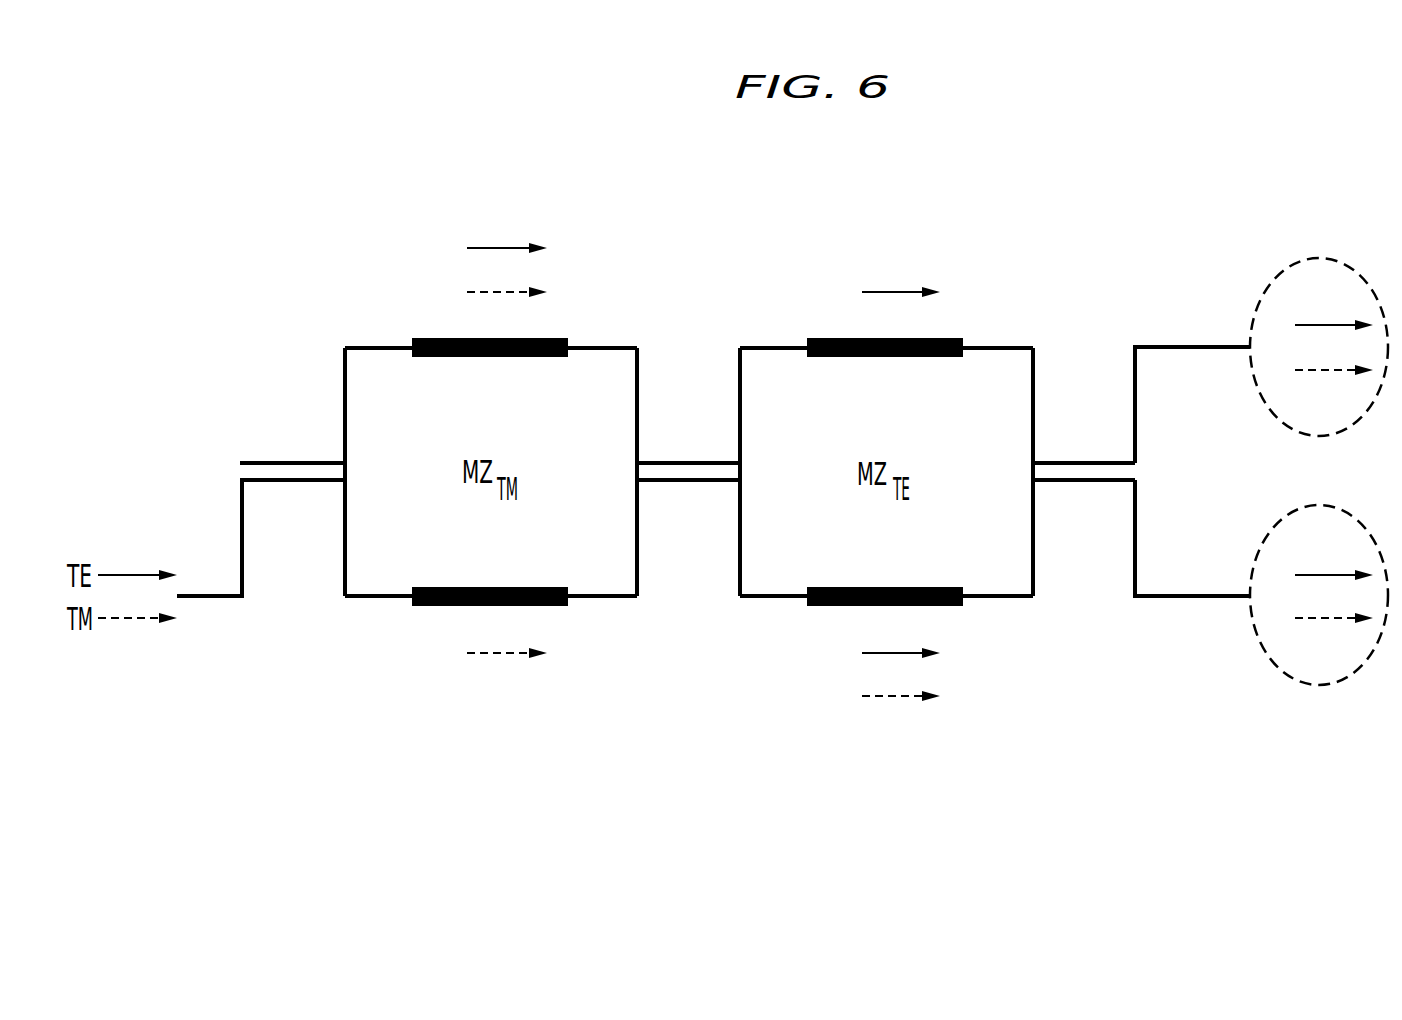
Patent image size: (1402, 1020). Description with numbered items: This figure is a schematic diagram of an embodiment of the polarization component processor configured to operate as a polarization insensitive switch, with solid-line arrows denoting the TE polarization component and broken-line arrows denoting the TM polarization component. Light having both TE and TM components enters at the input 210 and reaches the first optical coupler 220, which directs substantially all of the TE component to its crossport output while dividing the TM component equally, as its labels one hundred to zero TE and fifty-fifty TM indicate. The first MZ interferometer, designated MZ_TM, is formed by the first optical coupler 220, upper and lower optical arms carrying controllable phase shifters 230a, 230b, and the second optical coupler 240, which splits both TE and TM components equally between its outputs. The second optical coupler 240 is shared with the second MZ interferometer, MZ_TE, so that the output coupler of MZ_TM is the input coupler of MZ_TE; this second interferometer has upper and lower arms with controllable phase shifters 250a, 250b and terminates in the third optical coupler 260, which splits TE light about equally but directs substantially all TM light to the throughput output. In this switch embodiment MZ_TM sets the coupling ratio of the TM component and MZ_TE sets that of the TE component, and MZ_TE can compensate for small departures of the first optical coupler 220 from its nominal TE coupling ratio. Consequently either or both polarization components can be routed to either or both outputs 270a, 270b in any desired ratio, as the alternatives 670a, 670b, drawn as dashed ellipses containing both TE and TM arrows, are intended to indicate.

The input 210 is at (210, 593).
The first optical coupler 220 is at (348, 479).
The controllable phase shifter 230a is at (546, 360).
The controllable phase shifter 230b is at (553, 586).
The second optical coupler 240 is at (744, 479).
The controllable phase shifter 250a is at (941, 360).
The controllable phase shifter 250b is at (948, 586).
The third optical coupler 260 is at (1138, 479).
The output 270a is at (1171, 345).
The output 270b is at (1164, 599).
The alternative 670a is at (1322, 256).
The alternative 670b is at (1317, 688).